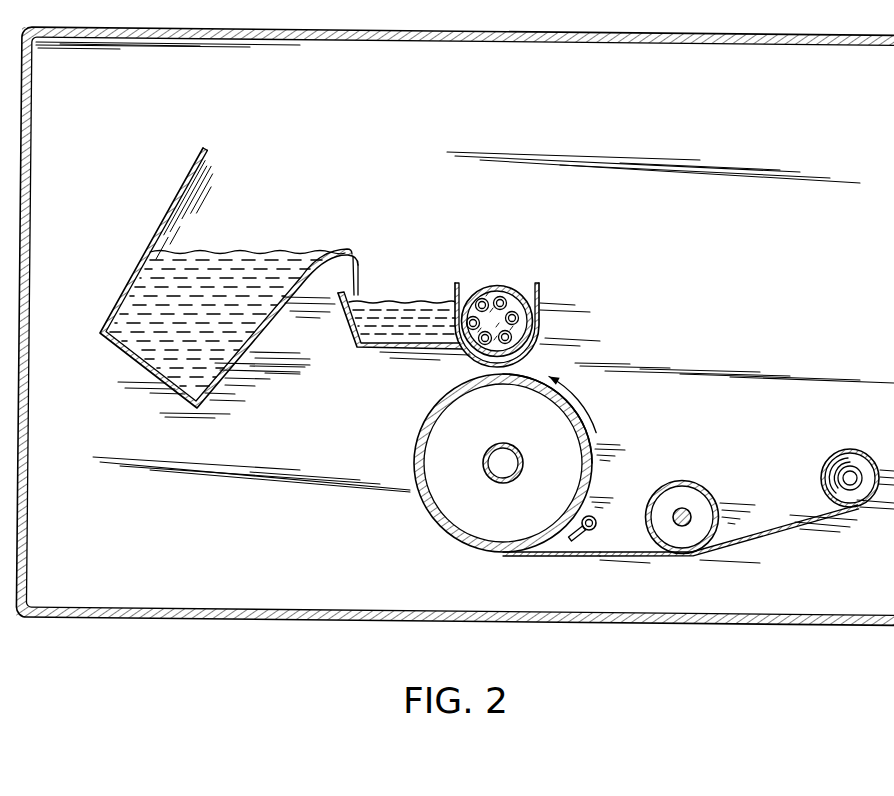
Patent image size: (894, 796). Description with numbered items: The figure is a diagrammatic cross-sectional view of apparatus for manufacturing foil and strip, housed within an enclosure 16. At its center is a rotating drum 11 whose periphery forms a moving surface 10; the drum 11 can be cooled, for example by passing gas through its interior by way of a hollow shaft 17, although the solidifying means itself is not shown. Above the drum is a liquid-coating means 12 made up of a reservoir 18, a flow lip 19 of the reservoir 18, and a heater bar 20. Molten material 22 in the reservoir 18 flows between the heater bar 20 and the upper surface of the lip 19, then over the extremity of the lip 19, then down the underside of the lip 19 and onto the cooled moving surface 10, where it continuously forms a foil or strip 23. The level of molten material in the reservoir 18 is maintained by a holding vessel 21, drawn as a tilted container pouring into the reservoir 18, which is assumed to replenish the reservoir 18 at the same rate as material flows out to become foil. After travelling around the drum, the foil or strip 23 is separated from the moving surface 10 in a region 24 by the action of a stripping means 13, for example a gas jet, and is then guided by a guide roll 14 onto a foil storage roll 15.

The moving surface 10 is at (530, 373).
The rotating drum 11 is at (592, 483).
The liquid-coating means 12 is at (425, 293).
The stripping means 13 is at (597, 520).
The guide roll 14 is at (680, 481).
The foil storage roll 15 is at (852, 457).
The enclosure 16 is at (543, 32).
The hollow shaft 17 is at (483, 463).
The reservoir 18 is at (370, 352).
The flow lip 19 is at (533, 343).
The heater bar 20 is at (503, 288).
The holding vessel 21 is at (173, 200).
The molten material 22 is at (387, 300).
The foil or strip 23 is at (562, 557).
The region 24 is at (537, 553).